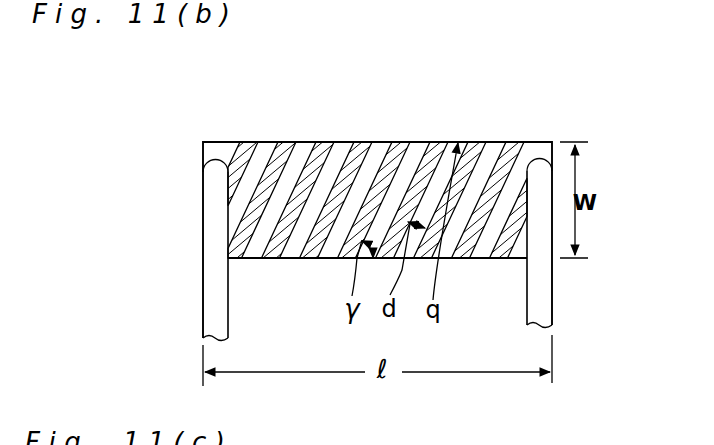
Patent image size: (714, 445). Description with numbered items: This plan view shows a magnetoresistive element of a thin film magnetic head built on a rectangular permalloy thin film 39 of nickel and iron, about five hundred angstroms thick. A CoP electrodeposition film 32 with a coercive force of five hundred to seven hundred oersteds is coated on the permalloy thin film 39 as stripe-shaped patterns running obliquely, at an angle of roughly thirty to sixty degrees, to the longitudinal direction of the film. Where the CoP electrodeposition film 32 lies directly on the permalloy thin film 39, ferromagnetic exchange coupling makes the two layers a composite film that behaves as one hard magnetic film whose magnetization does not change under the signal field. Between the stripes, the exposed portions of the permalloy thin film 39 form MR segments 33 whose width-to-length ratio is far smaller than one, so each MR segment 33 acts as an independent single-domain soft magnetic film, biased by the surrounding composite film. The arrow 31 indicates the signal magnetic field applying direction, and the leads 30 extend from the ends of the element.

The lead rods 30 is at (208, 288).
The signal magnetic field applying direction 31 is at (355, 108).
The CoP electrodeposition film 32 is at (275, 168).
The MR segment 33 is at (334, 228).
The permalloy thin film 39 is at (222, 153).